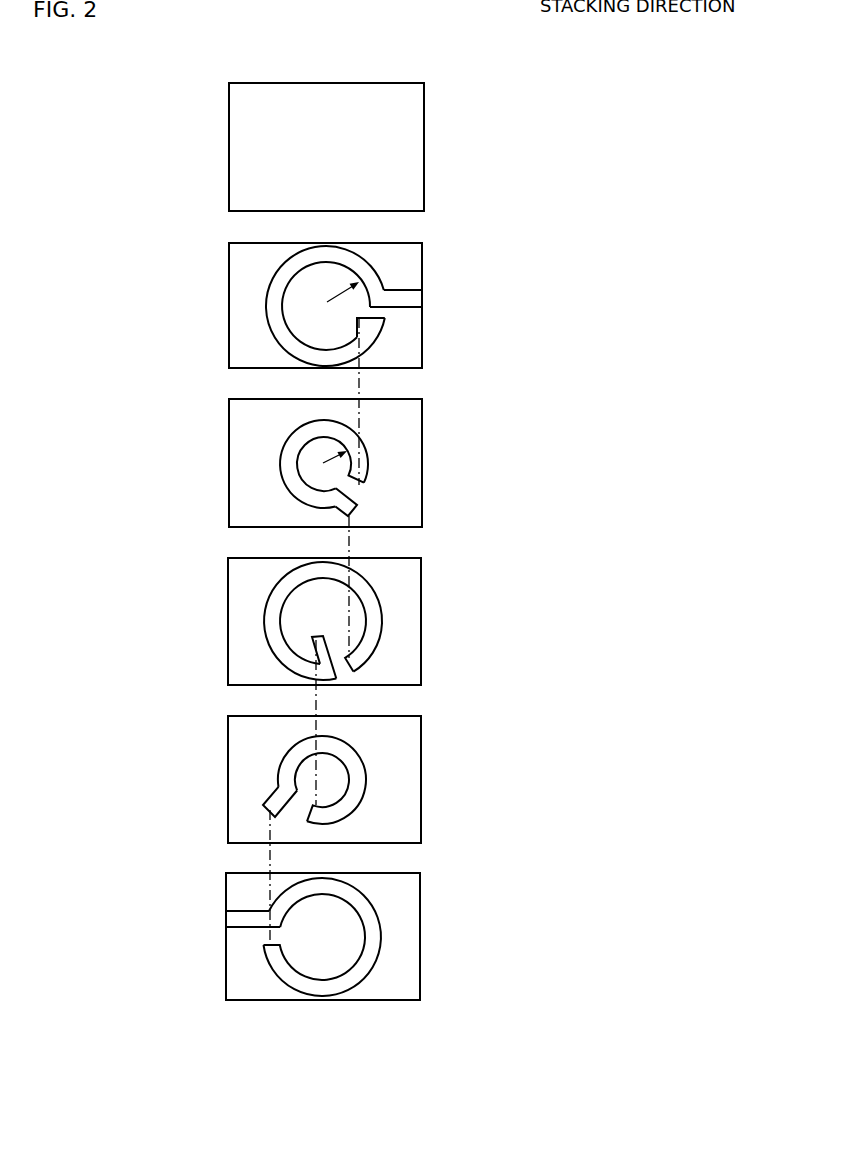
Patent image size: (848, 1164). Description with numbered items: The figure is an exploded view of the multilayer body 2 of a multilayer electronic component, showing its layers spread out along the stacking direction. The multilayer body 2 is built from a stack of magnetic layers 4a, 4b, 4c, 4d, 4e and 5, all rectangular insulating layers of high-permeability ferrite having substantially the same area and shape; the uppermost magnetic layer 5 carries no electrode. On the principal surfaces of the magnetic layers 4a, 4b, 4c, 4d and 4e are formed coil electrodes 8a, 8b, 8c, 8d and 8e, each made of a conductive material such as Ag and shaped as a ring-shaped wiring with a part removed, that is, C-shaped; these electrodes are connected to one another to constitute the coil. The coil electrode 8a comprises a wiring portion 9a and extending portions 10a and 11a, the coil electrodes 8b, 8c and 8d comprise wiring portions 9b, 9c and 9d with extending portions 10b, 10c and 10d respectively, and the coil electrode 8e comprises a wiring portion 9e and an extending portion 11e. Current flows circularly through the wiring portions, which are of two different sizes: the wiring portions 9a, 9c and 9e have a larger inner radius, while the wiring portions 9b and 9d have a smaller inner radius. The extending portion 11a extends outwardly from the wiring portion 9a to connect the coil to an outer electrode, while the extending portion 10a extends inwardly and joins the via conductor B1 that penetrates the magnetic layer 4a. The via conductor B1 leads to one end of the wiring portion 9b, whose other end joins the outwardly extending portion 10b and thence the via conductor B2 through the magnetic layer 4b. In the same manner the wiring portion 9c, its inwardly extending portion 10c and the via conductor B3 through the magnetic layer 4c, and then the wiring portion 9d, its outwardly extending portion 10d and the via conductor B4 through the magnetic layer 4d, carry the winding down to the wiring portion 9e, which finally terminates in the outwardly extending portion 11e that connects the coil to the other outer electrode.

The multilayer body 2 is at (470, 55).
The magnetic layer 5 is at (424, 162).
The magnetic layer 4a is at (422, 346).
The magnetic layer 4b is at (422, 468).
The magnetic layer 4c is at (422, 646).
The magnetic layer 4d is at (421, 812).
The magnetic layer 4e is at (420, 960).
The coil electrode 8a is at (343, 294).
The coil electrode 8b is at (340, 471).
The coil electrode 8c is at (328, 621).
The coil electrode 8d is at (329, 776).
The coil electrode 8e is at (333, 963).
The wiring portion 9a is at (273, 310).
The wiring portion 9b is at (290, 469).
The wiring portion 9c is at (272, 626).
The wiring portion 9d is at (283, 759).
The wiring portion 9e is at (322, 985).
The extending portion 10a is at (367, 317).
The extending portion 10b is at (355, 505).
The extending portion 10c is at (317, 637).
The extending portion 10d is at (268, 803).
The extending portion 11a is at (410, 292).
The extending portion 11e is at (240, 918).
The via conductor B1 is at (360, 387).
The via conductor B2 is at (350, 538).
The via conductor B3 is at (316, 697).
The via conductor B4 is at (269, 852).